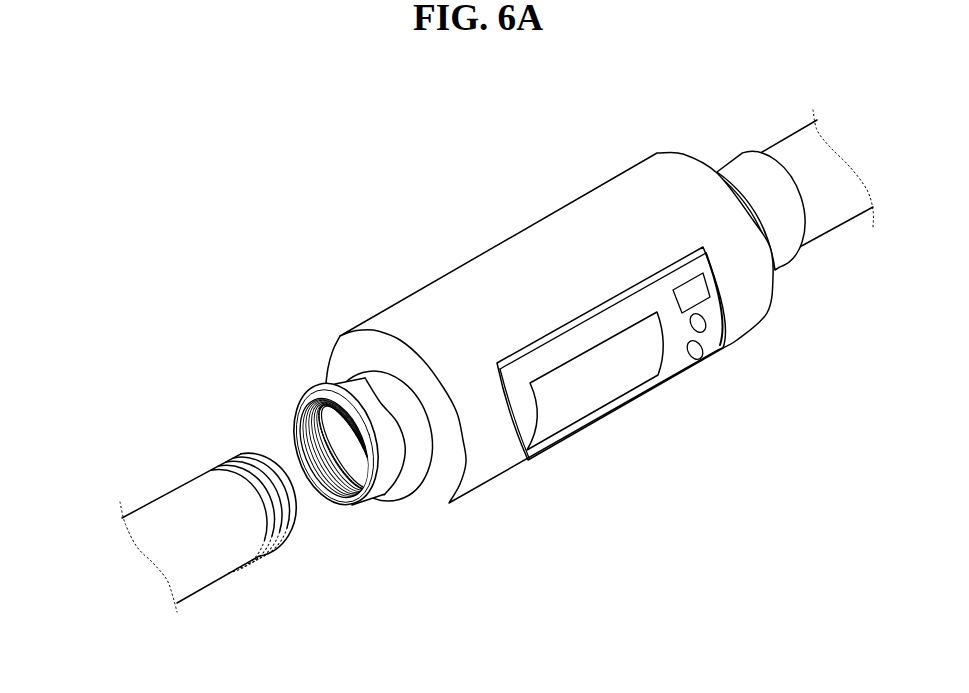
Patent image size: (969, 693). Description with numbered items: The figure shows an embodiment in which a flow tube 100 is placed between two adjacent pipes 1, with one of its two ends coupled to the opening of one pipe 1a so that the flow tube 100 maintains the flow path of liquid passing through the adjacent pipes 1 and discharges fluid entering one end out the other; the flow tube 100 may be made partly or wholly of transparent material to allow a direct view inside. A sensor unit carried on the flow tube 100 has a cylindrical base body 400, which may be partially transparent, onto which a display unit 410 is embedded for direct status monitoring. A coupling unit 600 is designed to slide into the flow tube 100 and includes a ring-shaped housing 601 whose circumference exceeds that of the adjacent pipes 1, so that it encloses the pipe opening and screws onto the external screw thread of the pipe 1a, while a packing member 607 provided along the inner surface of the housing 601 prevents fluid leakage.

The adjacent pipes 1 is at (146, 483).
The pipe 1a is at (192, 488).
The flow tube 100 is at (418, 452).
The base body 400 is at (743, 320).
The display unit 410 is at (672, 362).
The coupling unit 600 is at (330, 439).
The housing 601 is at (342, 391).
The packing member 607 is at (348, 504).